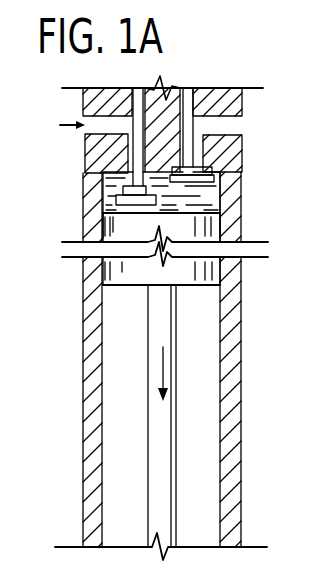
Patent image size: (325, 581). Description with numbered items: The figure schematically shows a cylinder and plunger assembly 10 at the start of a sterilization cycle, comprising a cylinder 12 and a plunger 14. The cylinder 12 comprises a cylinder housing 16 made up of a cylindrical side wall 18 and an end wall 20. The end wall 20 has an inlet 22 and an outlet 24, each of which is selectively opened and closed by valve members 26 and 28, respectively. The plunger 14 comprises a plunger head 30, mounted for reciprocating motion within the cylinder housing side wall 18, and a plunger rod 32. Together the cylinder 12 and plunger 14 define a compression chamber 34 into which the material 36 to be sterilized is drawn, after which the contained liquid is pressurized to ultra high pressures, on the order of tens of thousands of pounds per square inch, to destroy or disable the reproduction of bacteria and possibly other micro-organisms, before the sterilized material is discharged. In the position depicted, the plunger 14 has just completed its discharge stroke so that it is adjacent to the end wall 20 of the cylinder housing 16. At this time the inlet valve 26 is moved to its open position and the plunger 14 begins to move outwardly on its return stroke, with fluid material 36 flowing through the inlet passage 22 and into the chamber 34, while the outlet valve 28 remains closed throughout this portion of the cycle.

The cylinder and plunger assembly 10 is at (74, 316).
The cylinder 12 is at (250, 341).
The plunger 14 is at (222, 291).
The cylinder housing 16 is at (233, 368).
The cylindrical side wall 18 is at (233, 393).
The end wall 20 is at (230, 92).
The inlet 22 is at (93, 127).
The outlet 24 is at (233, 125).
The inlet valve member 26 is at (116, 197).
The outlet valve member 28 is at (225, 180).
The plunger head 30 is at (240, 301).
The plunger rod 32 is at (160, 437).
The compression chamber 34 is at (215, 200).
The material to be sterilized 36 is at (205, 205).